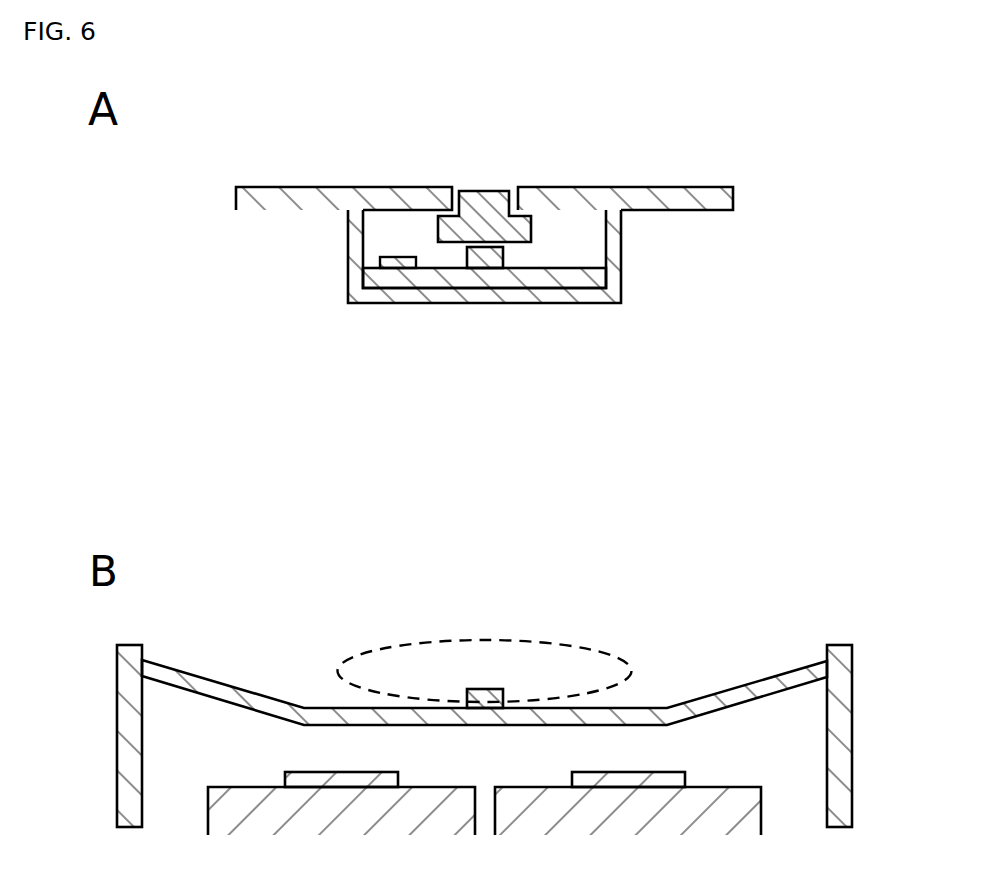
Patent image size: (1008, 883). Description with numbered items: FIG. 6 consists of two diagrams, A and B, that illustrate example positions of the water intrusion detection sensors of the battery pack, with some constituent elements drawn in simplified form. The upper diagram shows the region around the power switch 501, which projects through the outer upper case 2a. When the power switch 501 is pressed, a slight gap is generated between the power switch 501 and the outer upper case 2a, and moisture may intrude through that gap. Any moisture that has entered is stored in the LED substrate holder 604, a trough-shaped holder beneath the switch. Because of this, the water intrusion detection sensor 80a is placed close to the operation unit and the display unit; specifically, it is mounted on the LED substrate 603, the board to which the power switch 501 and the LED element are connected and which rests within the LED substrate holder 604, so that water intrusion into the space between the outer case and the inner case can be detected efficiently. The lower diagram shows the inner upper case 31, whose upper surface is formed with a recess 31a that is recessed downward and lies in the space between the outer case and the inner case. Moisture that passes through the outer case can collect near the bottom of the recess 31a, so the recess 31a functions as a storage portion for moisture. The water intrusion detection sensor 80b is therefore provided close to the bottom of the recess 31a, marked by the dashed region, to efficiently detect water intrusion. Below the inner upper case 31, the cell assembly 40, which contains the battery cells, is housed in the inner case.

The outer upper case 2a is at (702, 187).
The power switch 501 is at (484, 190).
The LED substrate 603 is at (577, 268).
The LED substrate holder 604 is at (621, 296).
The water intrusion detection sensor 80a is at (396, 258).
The water intrusion detection sensor 80b is at (484, 689).
The inner upper case 31 is at (852, 694).
The recess 31a is at (647, 689).
The cell assembly 40 is at (729, 773).